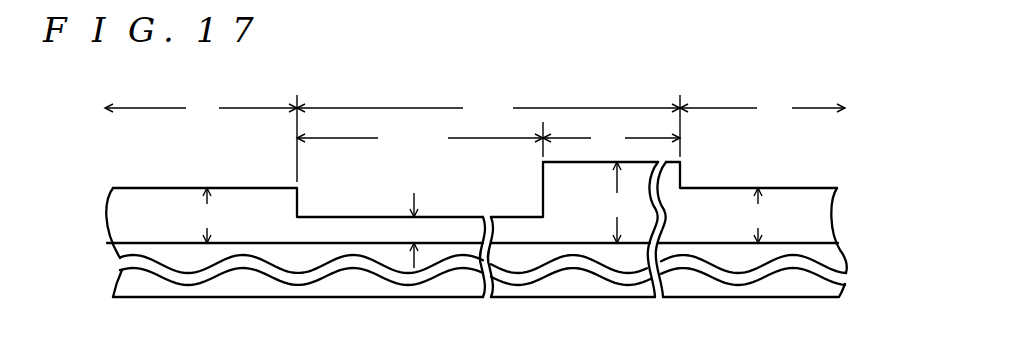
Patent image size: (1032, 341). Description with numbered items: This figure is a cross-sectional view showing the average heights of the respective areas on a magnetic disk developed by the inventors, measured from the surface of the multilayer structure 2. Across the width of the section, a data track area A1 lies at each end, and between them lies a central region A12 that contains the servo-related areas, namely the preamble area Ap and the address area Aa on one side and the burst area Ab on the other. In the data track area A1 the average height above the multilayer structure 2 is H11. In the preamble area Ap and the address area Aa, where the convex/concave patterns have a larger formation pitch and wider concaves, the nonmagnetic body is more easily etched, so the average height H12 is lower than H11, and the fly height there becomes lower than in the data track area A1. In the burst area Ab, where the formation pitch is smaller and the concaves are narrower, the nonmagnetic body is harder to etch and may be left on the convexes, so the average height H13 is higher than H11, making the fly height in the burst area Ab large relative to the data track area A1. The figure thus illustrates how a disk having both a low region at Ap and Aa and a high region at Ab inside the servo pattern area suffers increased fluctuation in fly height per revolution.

The multilayer structure 2 is at (832, 256).
The data track area A1 is at (475, 109).
The width of stepped region A12 is at (488, 109).
The preamble area Ap is at (420, 137).
The address area Aa is at (420, 137).
The burst area Ab is at (611, 137).
The average height in the data track area H11 is at (482, 215).
The average height in the preamble area and address area H12 is at (418, 230).
The average height of the burst area H13 is at (613, 202).